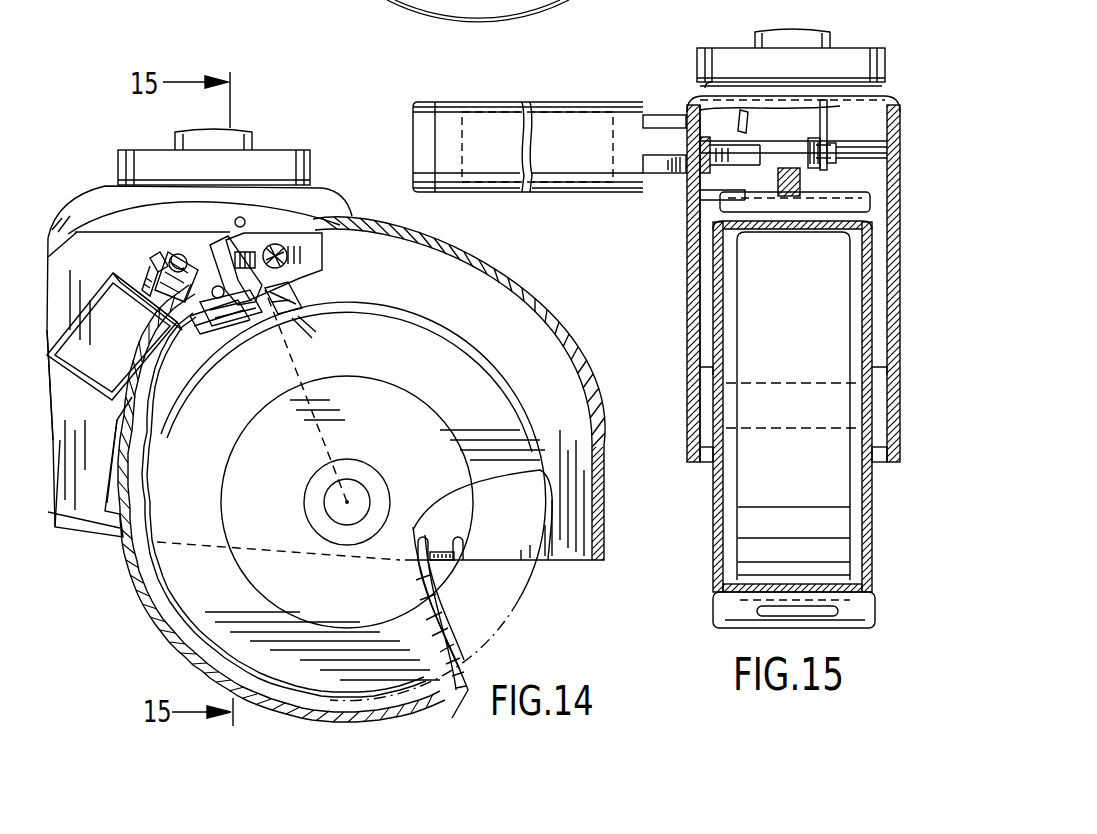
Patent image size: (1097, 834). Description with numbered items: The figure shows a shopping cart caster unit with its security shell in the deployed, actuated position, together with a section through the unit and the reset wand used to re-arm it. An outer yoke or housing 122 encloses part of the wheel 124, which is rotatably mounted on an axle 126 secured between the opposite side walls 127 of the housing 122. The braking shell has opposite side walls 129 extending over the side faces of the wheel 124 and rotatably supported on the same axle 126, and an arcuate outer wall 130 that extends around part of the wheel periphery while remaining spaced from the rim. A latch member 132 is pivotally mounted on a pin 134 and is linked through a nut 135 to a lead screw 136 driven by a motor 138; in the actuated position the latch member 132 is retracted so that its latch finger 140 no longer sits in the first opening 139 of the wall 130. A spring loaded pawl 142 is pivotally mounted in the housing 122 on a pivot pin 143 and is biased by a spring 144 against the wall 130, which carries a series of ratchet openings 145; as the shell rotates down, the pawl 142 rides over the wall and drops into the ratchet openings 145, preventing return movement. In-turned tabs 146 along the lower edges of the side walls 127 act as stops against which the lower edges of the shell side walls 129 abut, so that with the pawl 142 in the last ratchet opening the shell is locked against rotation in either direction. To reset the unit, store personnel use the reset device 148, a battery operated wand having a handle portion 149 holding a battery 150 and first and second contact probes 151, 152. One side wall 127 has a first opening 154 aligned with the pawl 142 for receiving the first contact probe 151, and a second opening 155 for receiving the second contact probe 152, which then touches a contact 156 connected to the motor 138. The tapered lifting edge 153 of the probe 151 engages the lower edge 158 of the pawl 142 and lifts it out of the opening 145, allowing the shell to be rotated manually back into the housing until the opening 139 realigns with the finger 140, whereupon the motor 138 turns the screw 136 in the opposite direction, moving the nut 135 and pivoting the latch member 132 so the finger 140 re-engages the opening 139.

In FIG. 14, the housing 122 is at (522, 300).
In FIG. 14, the wheel 124 is at (476, 384).
In FIG. 15, the wheel 124 is at (750, 520).
In FIG. 15, the axle 126 is at (768, 430).
In FIG. 15, the side walls 127 is at (690, 298).
In FIG. 15, the side walls 129 is at (868, 338).
In FIG. 14, the arcuate outer wall 130 is at (162, 632).
In FIG. 15, the arcuate outer wall 130 is at (707, 252).
In FIG. 14, the latch member 132 is at (148, 262).
In FIG. 14, the pin 134 is at (177, 322).
In FIG. 14, the nut 135 is at (174, 255).
In FIG. 14, the lead screw 136 is at (150, 278).
In FIG. 14, the motor 138 is at (118, 397).
In FIG. 14, the first opening 139 is at (262, 696).
In FIG. 15, the first opening 139 is at (730, 610).
In FIG. 14, the latch finger 140 is at (205, 324).
In FIG. 14, the pawl 142 is at (300, 306).
In FIG. 15, the pawl 142 is at (788, 206).
In FIG. 14, the pivot pin 143 is at (290, 252).
In FIG. 15, the pivot pin 143 is at (830, 160).
In FIG. 15, the spring 144 is at (827, 150).
In FIG. 14, the ratchet openings 145 is at (306, 332).
In FIG. 15, the ratchet openings 145 is at (690, 212).
In FIG. 14, the in-turned tab 146 is at (445, 562).
In FIG. 15, the in-turned tab 146 is at (856, 456).
In FIG. 15, the reset device 148 is at (555, 92).
In FIG. 15, the handle portion 149 is at (500, 102).
In FIG. 15, the battery 150 is at (565, 184).
In FIG. 15, the first contact probe 151 is at (652, 166).
In FIG. 15, the second contact probe 152 is at (664, 116).
In FIG. 15, the tapered lifting edge 153 is at (767, 140).
In FIG. 14, the first opening 154 is at (222, 262).
In FIG. 15, the first opening 154 is at (686, 190).
In FIG. 14, the second opening 155 is at (238, 216).
In FIG. 15, the second opening 155 is at (688, 100).
In FIG. 15, the contact 156 is at (707, 64).
In FIG. 14, the lower edge 158 is at (258, 304).
In FIG. 15, the lower edge 158 is at (813, 196).